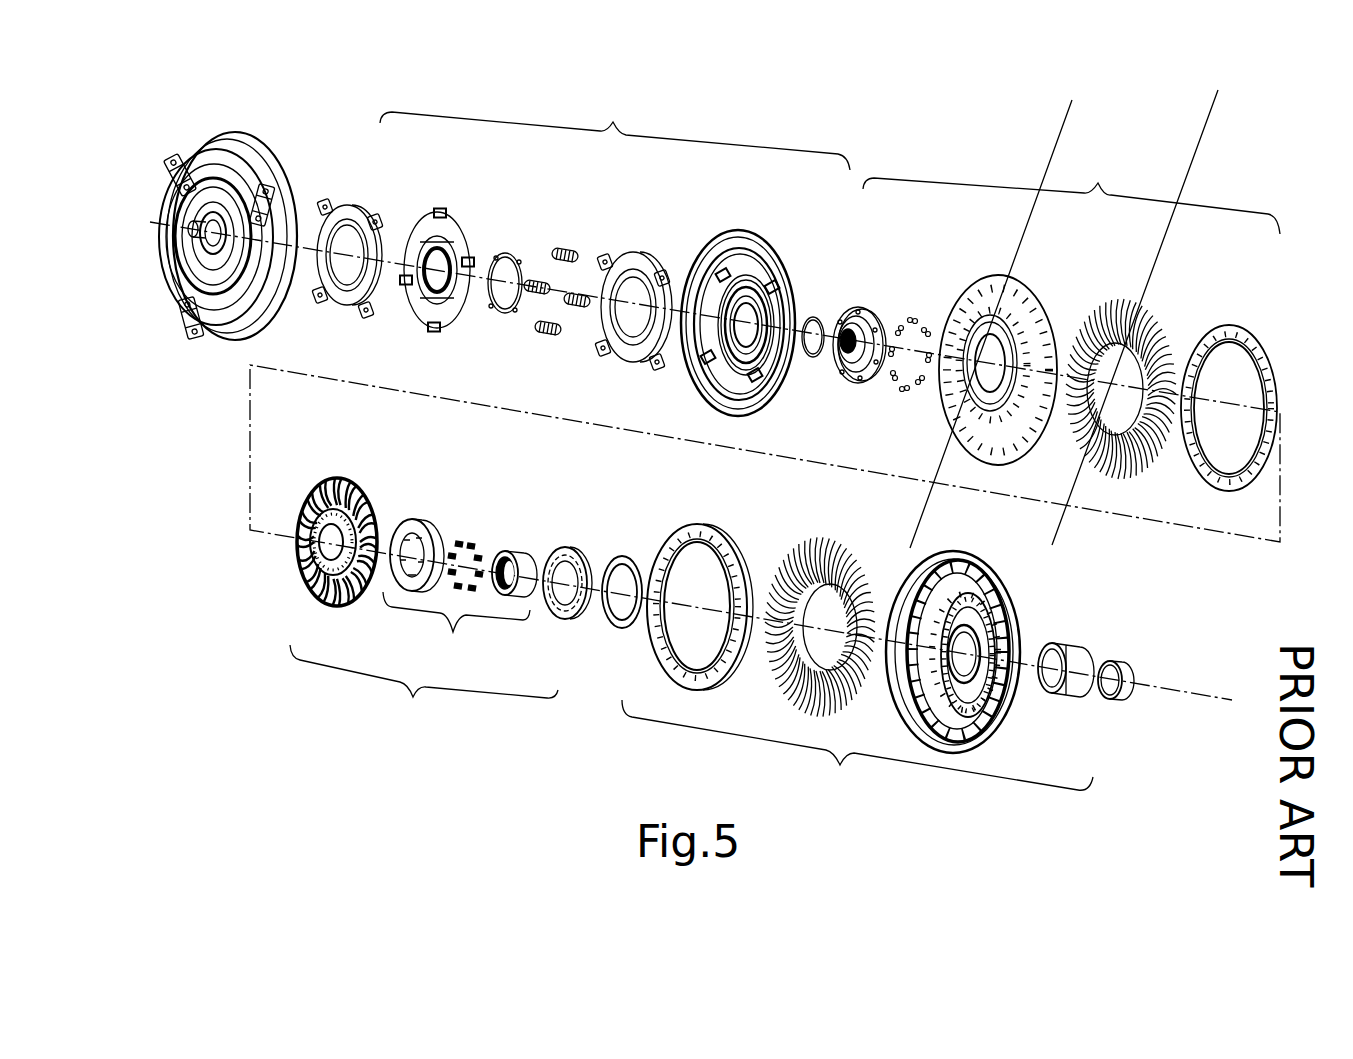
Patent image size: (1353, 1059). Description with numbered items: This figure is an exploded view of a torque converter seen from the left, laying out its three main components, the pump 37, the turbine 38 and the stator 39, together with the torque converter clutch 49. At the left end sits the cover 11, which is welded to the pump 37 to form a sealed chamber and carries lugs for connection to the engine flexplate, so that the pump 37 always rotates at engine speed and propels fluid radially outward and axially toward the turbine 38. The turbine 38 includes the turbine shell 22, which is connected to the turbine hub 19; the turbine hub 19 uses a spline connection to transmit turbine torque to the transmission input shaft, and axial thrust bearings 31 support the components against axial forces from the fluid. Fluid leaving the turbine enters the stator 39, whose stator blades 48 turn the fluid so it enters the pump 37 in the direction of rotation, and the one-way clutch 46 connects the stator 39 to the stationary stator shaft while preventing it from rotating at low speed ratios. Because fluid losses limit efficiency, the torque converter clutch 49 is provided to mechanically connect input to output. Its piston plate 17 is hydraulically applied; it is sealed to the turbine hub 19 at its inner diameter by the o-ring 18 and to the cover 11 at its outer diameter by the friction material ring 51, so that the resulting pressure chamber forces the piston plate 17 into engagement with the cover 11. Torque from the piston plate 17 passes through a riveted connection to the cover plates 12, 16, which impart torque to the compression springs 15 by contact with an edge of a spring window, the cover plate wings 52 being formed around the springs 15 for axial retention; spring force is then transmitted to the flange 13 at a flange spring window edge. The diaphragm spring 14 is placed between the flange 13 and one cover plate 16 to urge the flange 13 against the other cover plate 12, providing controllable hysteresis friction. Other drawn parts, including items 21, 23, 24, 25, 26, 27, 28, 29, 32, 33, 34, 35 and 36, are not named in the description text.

The cover 11 is at (292, 164).
The cover plate 12 is at (395, 196).
The cover plate wings 52 is at (347, 207).
The flange 13 is at (459, 206).
The diaphragm spring 14 is at (515, 245).
The compression springs 15 is at (582, 245).
The cover plate 16 is at (657, 246).
The piston plate 17 is at (784, 239).
The friction material ring 51 is at (740, 236).
The o-ring 18 is at (830, 302).
The turbine hub 19 is at (876, 294).
The bearing rollers 21 is at (927, 307).
The turbine shell 22 is at (1028, 270).
The turbine blade wheel 23 is at (1152, 294).
The turbine core ring 24 is at (1243, 315).
The stator 25 is at (372, 475).
The stator blades 48 is at (345, 482).
The one-way clutch outer race 26 is at (435, 506).
The one-way clutch rollers and cage 27 is at (485, 521).
The one-way clutch inner race 28 is at (532, 535).
The thrust washer 29 is at (585, 535).
The axial thrust bearings 31 is at (635, 546).
The impeller core ring 32 is at (748, 524).
The impeller blade wheel 33 is at (870, 541).
The impeller shell 34 is at (1024, 571).
The impeller hub 35 is at (1079, 630).
The bushing 36 is at (1125, 653).
The pump 37 is at (857, 759).
The turbine 38 is at (1071, 186).
The stator 39 is at (424, 694).
The one-way clutch 46 is at (456, 632).
The torque converter clutch 49 is at (615, 126).